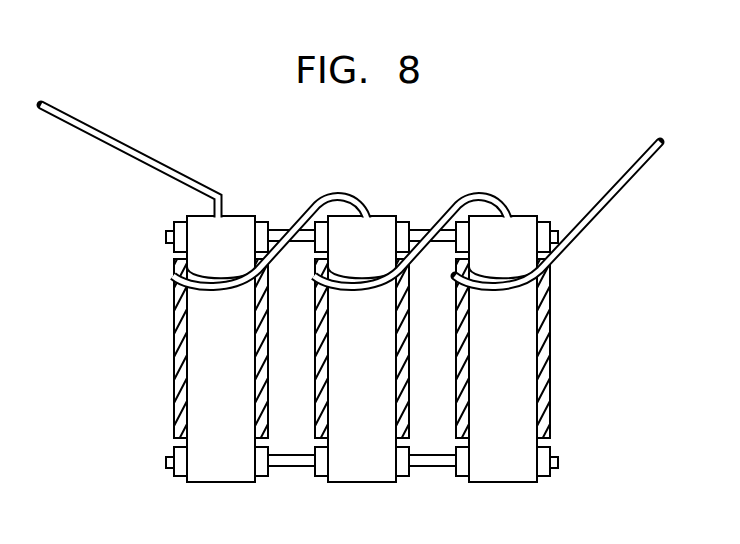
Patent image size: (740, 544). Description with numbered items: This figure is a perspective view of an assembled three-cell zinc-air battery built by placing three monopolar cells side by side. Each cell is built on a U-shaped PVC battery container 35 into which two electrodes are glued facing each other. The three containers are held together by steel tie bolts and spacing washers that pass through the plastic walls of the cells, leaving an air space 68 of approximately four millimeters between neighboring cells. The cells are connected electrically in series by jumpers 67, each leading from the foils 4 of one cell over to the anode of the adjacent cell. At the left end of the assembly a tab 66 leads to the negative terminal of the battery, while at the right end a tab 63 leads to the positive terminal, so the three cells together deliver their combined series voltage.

The foil 4 is at (173, 350).
The U-shaped PVC battery container 35 is at (218, 468).
The tab 63 is at (644, 167).
The tab 66 is at (136, 150).
The jumper 67 is at (297, 221).
The air space 68 is at (277, 367).